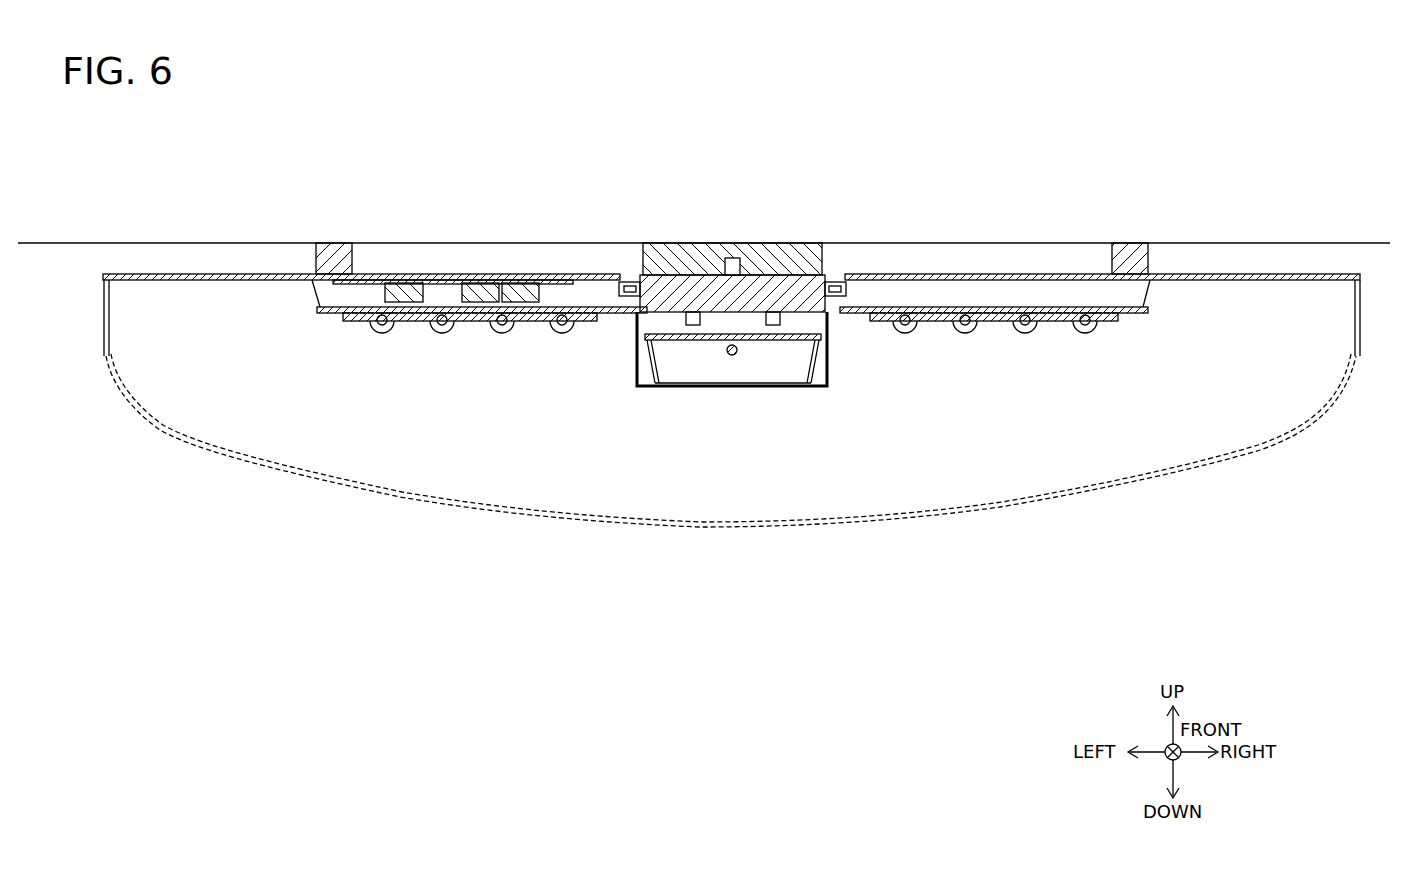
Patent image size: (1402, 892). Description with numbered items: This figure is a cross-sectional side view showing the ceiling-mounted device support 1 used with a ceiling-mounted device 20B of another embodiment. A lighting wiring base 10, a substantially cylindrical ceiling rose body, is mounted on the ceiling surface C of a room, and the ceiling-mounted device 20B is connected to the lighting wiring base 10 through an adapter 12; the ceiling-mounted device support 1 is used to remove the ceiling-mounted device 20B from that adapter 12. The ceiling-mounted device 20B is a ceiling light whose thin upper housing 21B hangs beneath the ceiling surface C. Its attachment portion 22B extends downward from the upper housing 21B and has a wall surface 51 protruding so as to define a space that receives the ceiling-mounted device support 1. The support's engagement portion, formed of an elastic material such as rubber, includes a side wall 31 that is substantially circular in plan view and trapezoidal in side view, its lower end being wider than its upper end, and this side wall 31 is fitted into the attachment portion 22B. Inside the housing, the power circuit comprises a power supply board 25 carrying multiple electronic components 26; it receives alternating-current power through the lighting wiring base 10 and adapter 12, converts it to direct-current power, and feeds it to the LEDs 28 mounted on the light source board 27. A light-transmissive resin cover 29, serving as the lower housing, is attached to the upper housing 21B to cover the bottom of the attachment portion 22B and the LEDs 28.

The ceiling-mounted device support 1 is at (730, 432).
The lighting wiring base 10 is at (706, 272).
The adapter 12 is at (762, 283).
The ceiling-mounted device 20B is at (322, 690).
The upper housing 21B is at (965, 275).
The attachment portion 22B is at (650, 280).
The power supply board 25 is at (373, 282).
The electronic component 26 is at (463, 300).
The light source board 27 is at (470, 322).
The LED 28 is at (385, 325).
The cover 29 is at (533, 519).
The side wall 31 is at (646, 355).
The wall surface 51 is at (636, 337).
The ceiling surface C is at (1196, 242).